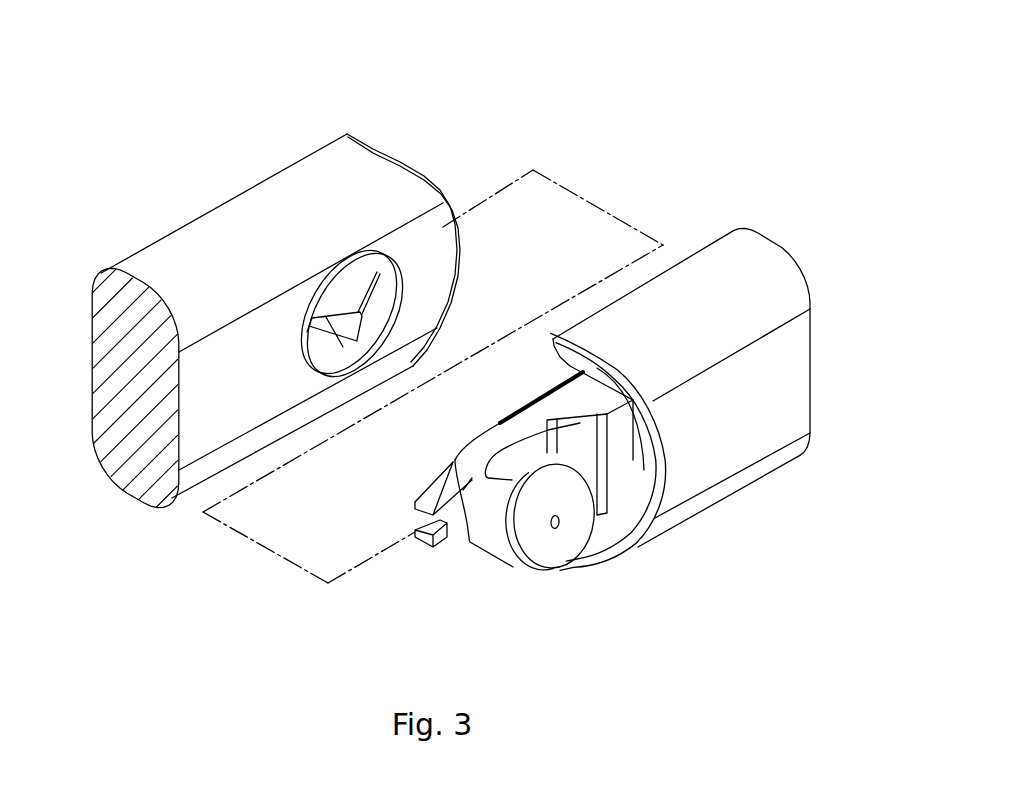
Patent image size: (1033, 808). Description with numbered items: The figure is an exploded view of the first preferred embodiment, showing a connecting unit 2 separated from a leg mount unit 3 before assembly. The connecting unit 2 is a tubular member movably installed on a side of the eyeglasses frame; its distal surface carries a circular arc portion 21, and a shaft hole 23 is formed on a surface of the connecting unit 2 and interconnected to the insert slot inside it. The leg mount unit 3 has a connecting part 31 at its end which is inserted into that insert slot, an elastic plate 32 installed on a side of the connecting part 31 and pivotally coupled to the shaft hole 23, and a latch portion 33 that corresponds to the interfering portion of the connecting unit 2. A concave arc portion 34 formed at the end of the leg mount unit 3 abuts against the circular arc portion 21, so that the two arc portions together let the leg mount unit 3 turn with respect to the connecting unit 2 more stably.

The connecting unit 2 is at (301, 276).
The circular arc portion 21 is at (437, 184).
The shaft hole 23 is at (343, 292).
The leg mount unit 3 is at (573, 391).
The connecting part 31 is at (538, 412).
The elastic plate 32 is at (543, 558).
The latch portion 33 is at (420, 536).
The concave arc portion 34 is at (613, 530).